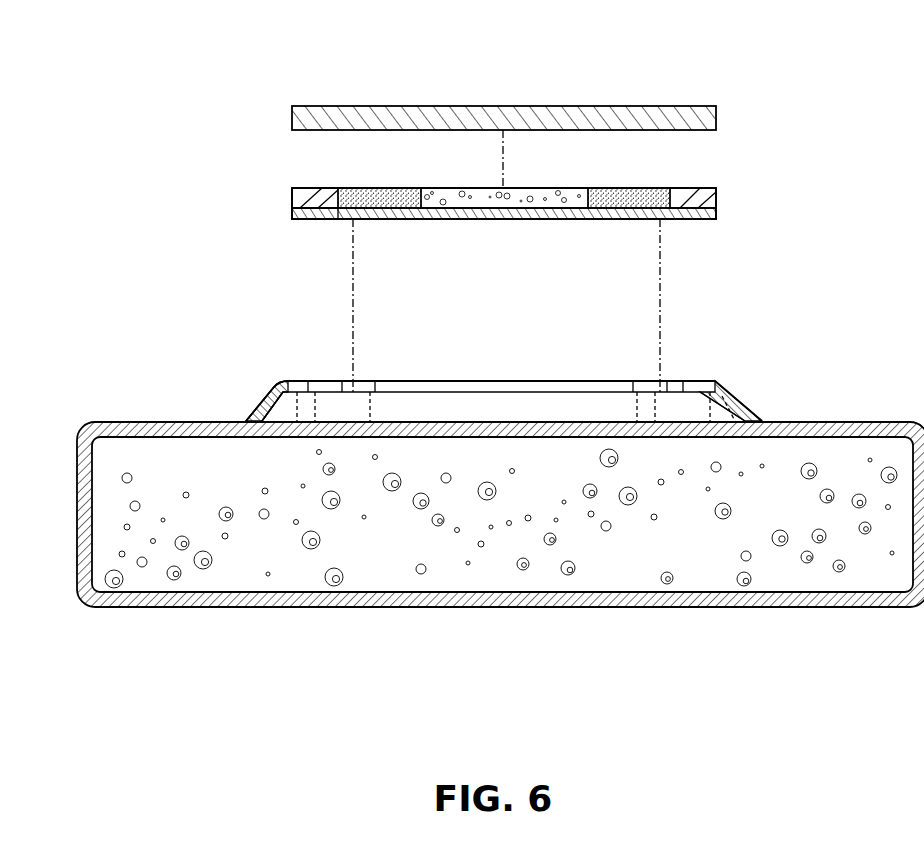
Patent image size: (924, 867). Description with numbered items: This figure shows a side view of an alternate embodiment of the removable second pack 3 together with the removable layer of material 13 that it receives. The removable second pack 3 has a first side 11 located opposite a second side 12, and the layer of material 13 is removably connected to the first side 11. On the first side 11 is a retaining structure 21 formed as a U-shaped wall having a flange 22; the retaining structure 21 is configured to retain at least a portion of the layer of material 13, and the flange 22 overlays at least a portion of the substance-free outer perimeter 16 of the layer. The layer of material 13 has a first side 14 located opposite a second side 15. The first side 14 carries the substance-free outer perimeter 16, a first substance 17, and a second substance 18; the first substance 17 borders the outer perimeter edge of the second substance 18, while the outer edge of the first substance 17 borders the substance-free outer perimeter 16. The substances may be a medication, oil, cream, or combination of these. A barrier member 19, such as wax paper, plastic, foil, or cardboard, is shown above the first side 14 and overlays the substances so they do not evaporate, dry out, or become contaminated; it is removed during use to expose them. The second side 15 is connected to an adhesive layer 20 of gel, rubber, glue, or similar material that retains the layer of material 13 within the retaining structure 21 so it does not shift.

The removable second pack 3 is at (160, 584).
The first side 11 is at (764, 418).
The second side 12 is at (830, 608).
The layer of material 13 is at (716, 199).
The first side 14 is at (306, 197).
The second side 15 is at (302, 213).
The substance-free outer perimeter 16 is at (313, 197).
The first substance 17 is at (616, 197).
The second substance 18 is at (531, 198).
The barrier member 19 is at (423, 122).
The adhesive layer 20 is at (716, 214).
The retaining structure 21 is at (258, 412).
The flange 22 is at (293, 381).